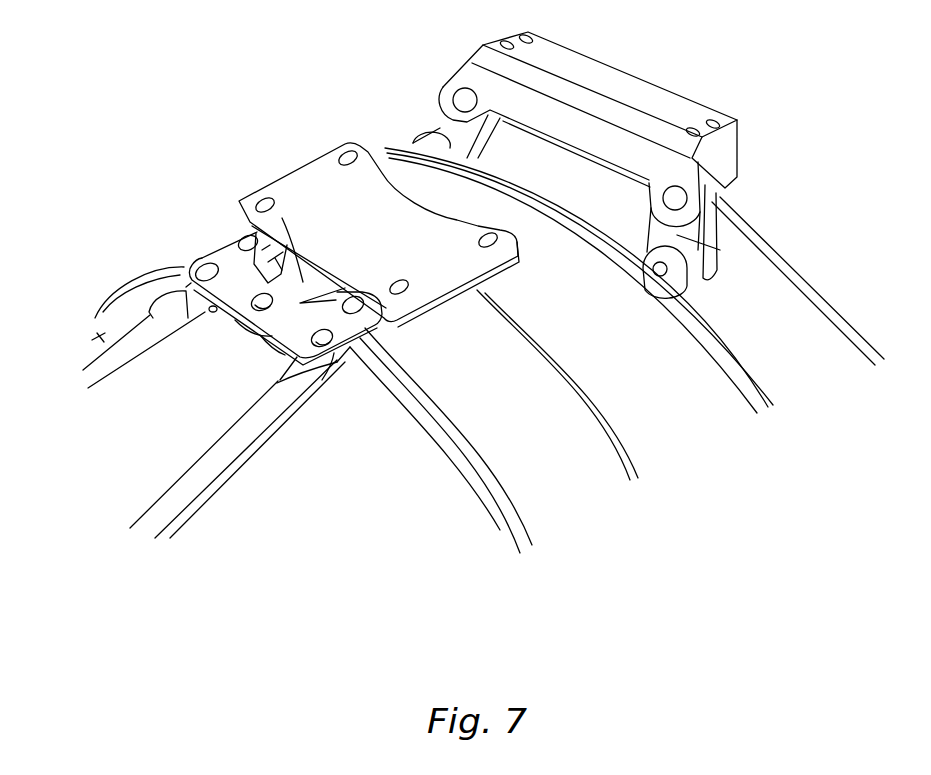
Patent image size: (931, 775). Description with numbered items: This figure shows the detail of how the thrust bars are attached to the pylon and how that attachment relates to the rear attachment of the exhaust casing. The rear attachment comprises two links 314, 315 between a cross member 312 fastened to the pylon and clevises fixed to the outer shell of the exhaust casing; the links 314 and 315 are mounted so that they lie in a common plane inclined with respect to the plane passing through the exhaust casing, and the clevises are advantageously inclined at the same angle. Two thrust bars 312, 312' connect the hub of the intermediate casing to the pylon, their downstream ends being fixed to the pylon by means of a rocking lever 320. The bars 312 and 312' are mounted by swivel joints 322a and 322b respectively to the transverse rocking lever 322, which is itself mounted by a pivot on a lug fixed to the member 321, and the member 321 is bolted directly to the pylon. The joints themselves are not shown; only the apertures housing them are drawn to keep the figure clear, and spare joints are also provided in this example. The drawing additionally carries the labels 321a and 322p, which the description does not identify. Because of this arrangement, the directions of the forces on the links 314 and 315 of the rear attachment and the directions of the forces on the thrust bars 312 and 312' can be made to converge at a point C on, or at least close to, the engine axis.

The thrust bar 312 is at (398, 256).
The thrust bar 312' is at (331, 440).
The link 314 is at (445, 130).
The link 315 is at (703, 253).
The rocking lever 320 is at (327, 183).
The member 321 is at (382, 236).
The plate notch 321a is at (300, 272).
The transverse rocking lever 322 is at (252, 312).
The swivel joint 322a is at (345, 352).
The swivel joint 322b is at (203, 270).
The clamp pin 322p is at (212, 312).